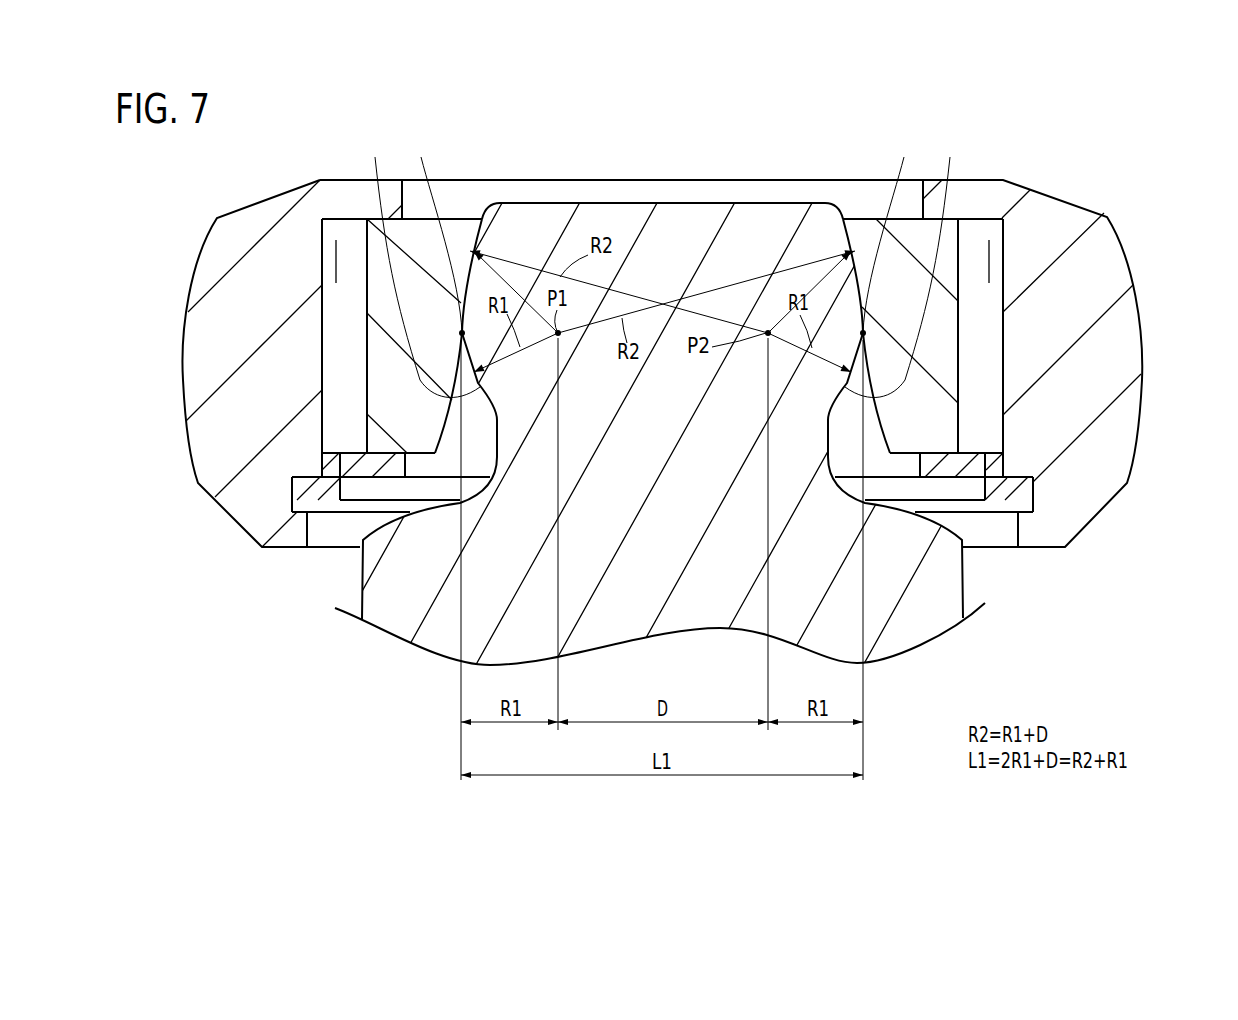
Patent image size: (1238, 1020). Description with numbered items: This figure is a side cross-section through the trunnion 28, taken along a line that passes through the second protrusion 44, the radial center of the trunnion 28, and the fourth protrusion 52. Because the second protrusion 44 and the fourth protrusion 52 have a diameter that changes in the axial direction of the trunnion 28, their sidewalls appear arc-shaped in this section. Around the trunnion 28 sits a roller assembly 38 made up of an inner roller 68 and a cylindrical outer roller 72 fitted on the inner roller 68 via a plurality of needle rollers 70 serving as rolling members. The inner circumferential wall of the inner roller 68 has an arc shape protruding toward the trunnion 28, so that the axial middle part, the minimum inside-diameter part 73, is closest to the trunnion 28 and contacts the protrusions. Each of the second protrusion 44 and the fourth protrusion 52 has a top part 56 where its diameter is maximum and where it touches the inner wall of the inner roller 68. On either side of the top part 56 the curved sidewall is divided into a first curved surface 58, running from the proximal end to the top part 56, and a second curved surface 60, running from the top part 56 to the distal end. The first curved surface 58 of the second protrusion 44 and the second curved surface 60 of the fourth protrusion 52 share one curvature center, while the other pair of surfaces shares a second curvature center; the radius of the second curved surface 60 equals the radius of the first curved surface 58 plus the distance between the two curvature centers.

The trunnion 28 is at (650, 225).
The roller assembly 38 is at (1033, 188).
The second protrusion 44 is at (485, 140).
The fourth protrusion 52 is at (968, 140).
The top part 56 is at (662, 293).
The first curved surface 58 is at (662, 293).
The second curved surface 60 is at (848, 232).
The inner roller 68 is at (907, 430).
The needle roller 70 is at (982, 417).
The outer roller 72 is at (1103, 245).
The minimum inside-diameter part 73 is at (863, 332).